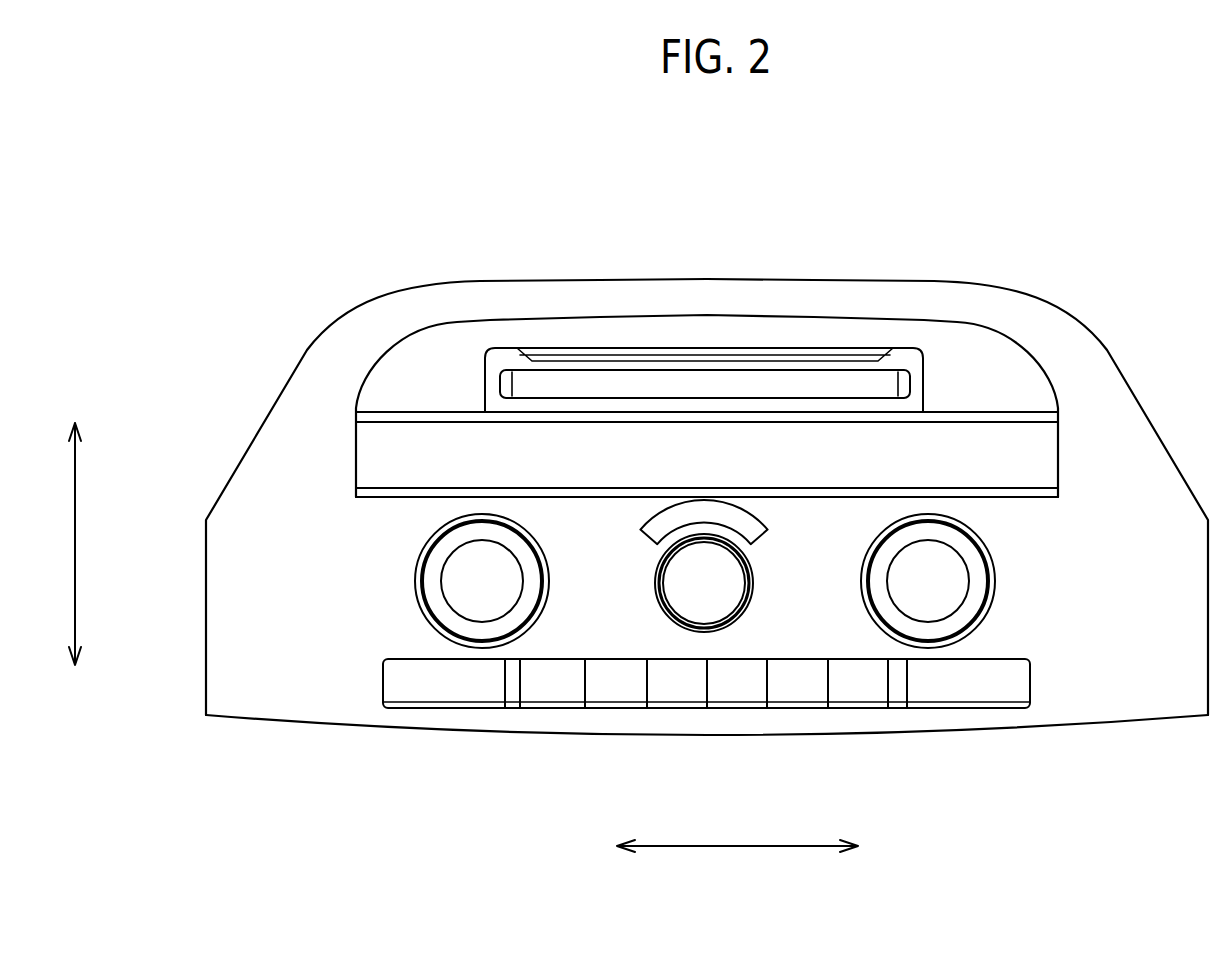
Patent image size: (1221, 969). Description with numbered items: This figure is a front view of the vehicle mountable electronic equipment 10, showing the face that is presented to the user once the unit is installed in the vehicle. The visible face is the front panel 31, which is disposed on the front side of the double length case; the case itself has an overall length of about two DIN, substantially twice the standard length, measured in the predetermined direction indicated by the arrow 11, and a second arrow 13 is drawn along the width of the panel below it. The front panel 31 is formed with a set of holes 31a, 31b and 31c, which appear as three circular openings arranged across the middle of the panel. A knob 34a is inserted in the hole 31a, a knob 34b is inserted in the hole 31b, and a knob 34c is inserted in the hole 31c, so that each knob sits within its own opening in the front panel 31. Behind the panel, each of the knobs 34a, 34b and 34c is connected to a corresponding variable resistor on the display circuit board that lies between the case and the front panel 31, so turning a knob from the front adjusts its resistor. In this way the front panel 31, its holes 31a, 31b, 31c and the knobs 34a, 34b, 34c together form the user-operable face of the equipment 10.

The vehicle mountable electronic equipment 10 is at (992, 215).
The arrow 11 is at (75, 470).
The left-right direction 13 is at (735, 850).
The front panel 31 is at (1137, 707).
The hole 31a is at (425, 615).
The hole 31b is at (663, 610).
The hole 31c is at (990, 610).
The knob 34a is at (470, 580).
The knob 34b is at (728, 588).
The knob 34c is at (953, 578).